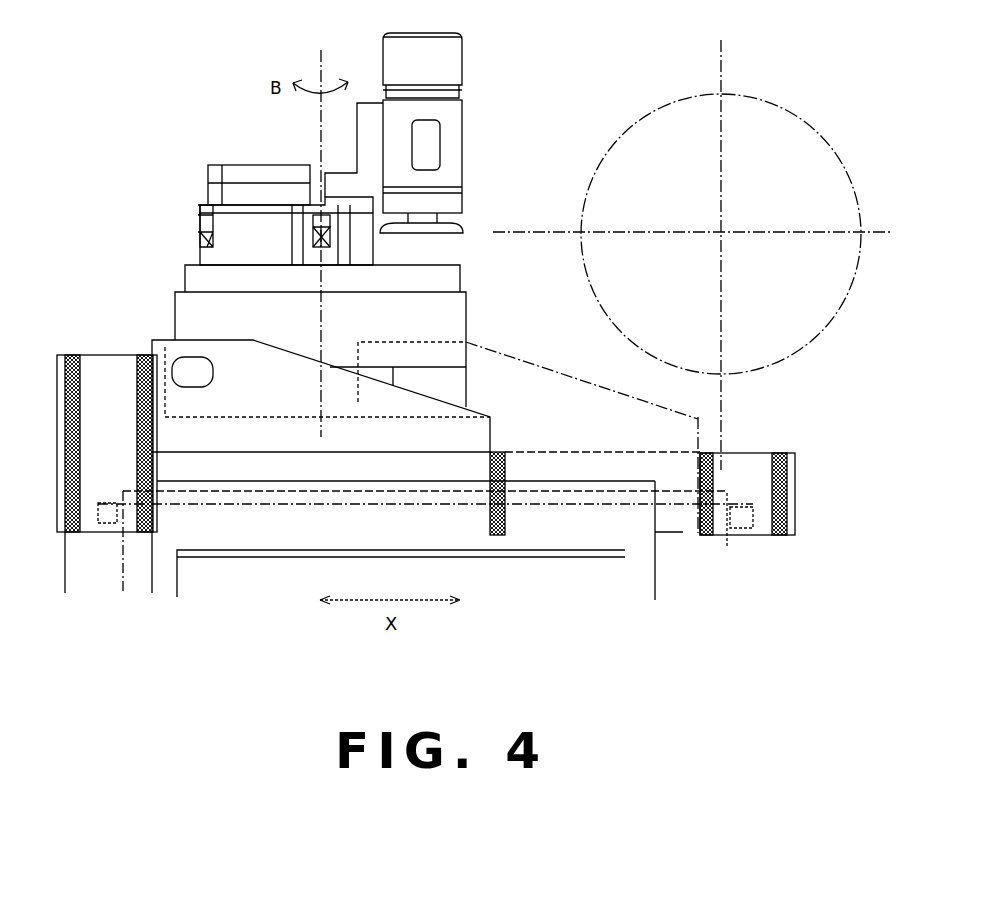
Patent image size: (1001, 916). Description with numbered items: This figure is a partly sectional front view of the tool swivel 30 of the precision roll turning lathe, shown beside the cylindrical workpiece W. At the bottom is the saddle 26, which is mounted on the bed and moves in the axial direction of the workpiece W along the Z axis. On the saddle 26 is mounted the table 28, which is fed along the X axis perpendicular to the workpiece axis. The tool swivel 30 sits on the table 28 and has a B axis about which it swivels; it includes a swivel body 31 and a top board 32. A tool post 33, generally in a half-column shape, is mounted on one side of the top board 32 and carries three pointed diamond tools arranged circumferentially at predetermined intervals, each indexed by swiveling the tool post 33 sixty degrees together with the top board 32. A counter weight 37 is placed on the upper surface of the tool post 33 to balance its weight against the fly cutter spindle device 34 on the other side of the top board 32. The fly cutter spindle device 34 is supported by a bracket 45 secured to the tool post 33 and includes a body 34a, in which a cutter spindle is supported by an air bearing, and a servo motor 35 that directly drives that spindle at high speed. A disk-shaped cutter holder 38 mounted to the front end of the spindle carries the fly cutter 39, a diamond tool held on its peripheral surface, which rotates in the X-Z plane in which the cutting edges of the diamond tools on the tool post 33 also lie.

The saddle 26 is at (622, 588).
The table 28 is at (260, 467).
The tool swivel 30 is at (475, 327).
The swivel body 31 is at (443, 312).
The top board 32 is at (193, 280).
The tool post 33 is at (260, 232).
The fly cutter spindle device 34 is at (466, 120).
The body 34a is at (445, 143).
The servo motor 35 is at (450, 62).
The counter weight 37 is at (235, 173).
The cutter holder 38 is at (425, 236).
The fly cutter 39 is at (465, 230).
The bracket 45 is at (370, 117).
The workpiece W is at (765, 98).